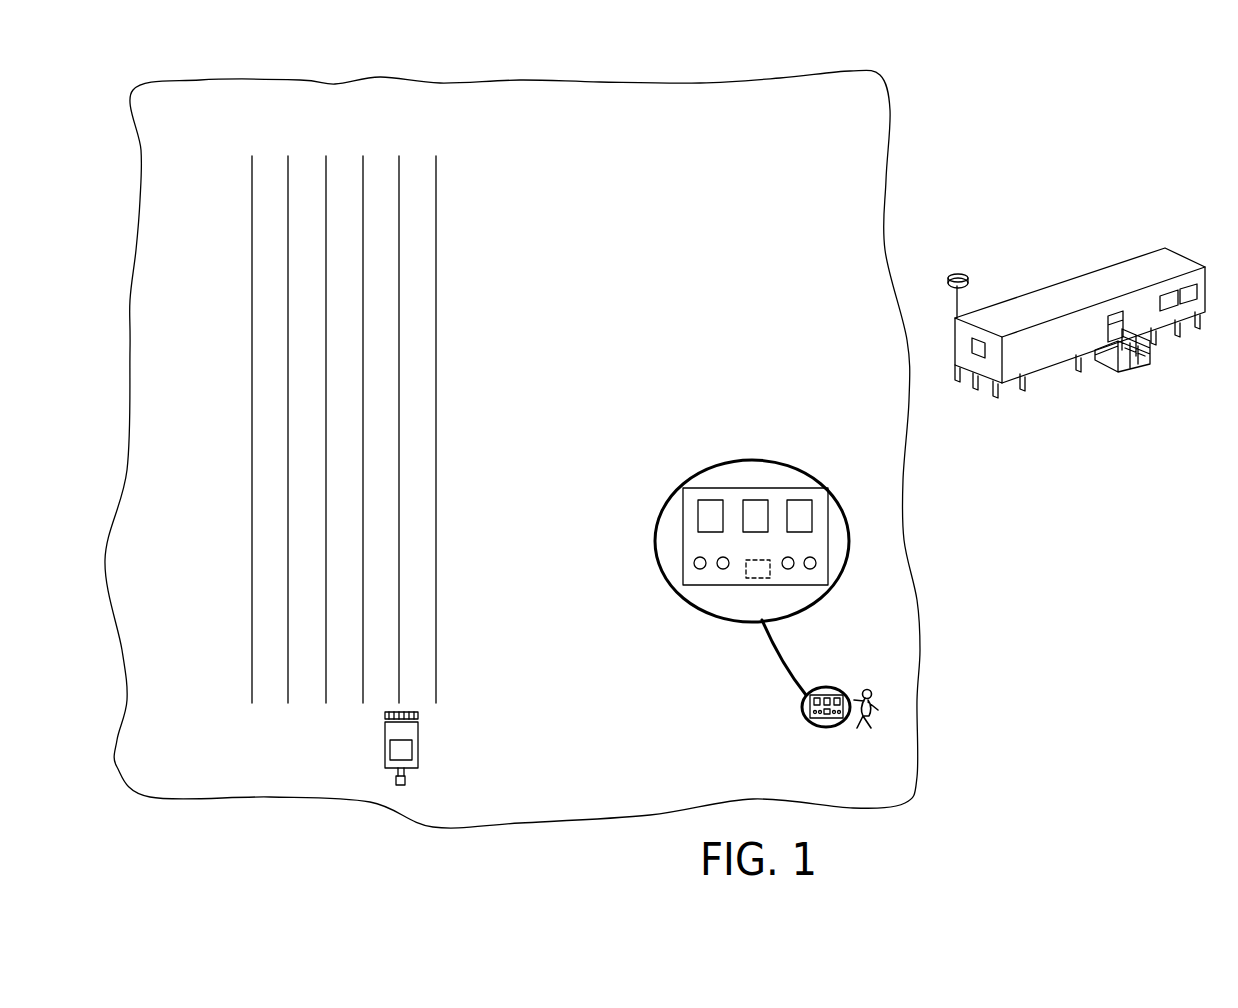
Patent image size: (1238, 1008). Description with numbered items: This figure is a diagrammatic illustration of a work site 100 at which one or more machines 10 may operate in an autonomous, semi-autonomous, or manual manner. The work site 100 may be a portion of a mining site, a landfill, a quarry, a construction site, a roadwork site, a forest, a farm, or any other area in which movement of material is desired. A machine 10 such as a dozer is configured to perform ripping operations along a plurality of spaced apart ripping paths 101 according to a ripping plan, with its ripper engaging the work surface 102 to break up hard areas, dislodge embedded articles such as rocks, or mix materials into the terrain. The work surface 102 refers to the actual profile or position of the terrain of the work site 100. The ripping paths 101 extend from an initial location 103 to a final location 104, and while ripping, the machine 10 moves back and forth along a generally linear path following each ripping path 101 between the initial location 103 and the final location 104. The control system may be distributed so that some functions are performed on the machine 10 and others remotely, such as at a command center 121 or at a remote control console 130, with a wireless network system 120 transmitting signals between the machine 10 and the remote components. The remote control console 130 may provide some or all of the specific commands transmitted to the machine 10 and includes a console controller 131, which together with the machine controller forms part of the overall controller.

The machine 10 is at (418, 745).
The work site 100 is at (655, 449).
The ripping paths 101 is at (436, 337).
The work surface 102 is at (868, 764).
The initial location 103 is at (477, 740).
The final location 104 is at (359, 395).
The wireless network system 120 is at (968, 280).
The command center 121 is at (1088, 298).
The remote control console 130 is at (755, 570).
The console controller 131 is at (755, 568).